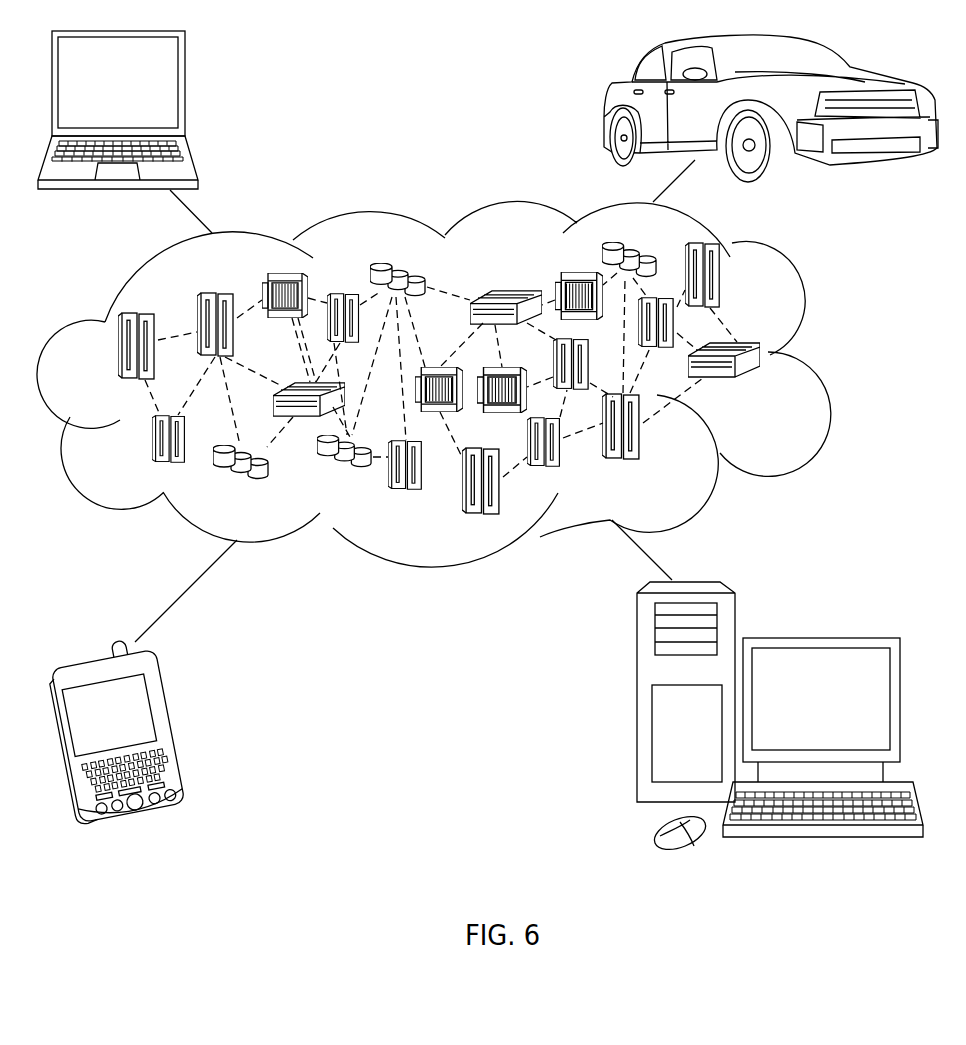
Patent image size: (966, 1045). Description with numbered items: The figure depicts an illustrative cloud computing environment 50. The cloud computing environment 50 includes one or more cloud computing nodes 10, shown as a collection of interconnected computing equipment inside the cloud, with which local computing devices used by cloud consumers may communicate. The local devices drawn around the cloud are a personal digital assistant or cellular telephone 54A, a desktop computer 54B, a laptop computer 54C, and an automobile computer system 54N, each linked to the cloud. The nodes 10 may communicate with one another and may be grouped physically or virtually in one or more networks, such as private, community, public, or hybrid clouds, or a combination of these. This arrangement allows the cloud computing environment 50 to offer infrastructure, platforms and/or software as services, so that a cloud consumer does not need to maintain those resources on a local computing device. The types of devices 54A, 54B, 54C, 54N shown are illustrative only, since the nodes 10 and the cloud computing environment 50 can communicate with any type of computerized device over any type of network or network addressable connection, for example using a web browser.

The cloud computing node 10 is at (763, 388).
The cloud computing environment 50 is at (452, 384).
The personal digital assistant or cellular telephone 54A is at (175, 725).
The desktop computer 54B is at (818, 638).
The laptop computer 54C is at (185, 90).
The automobile computer system 54N is at (610, 108).